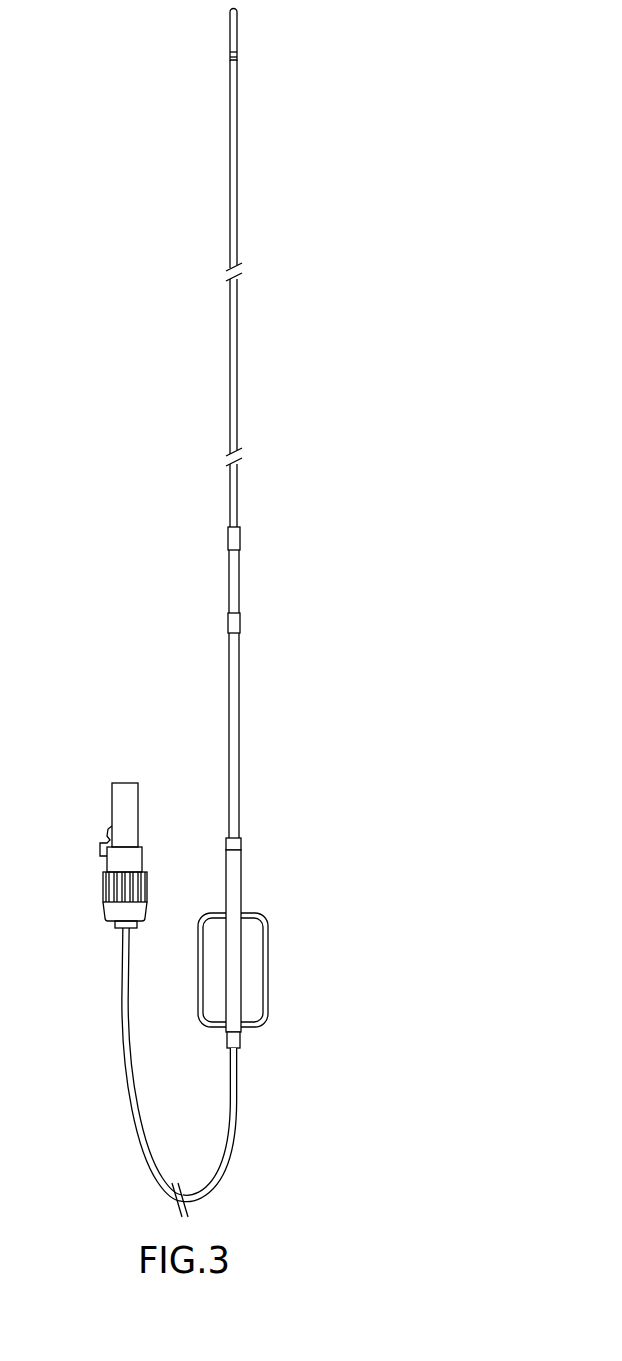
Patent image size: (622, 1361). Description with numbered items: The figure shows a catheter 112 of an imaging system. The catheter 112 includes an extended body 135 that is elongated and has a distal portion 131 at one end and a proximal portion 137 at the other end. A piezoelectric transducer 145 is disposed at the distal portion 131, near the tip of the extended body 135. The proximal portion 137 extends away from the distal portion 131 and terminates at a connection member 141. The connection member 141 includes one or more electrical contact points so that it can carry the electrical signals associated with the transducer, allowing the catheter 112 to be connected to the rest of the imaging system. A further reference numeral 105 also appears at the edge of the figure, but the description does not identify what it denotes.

The catheter 112 is at (337, 88).
The distal portion 131 is at (237, 222).
The piezoelectric transducer 145 is at (231, 33).
The extended body 135 is at (239, 582).
The proximal portion 137 is at (237, 1137).
The connection member 141 is at (112, 813).
The system 105 is at (11, 313).